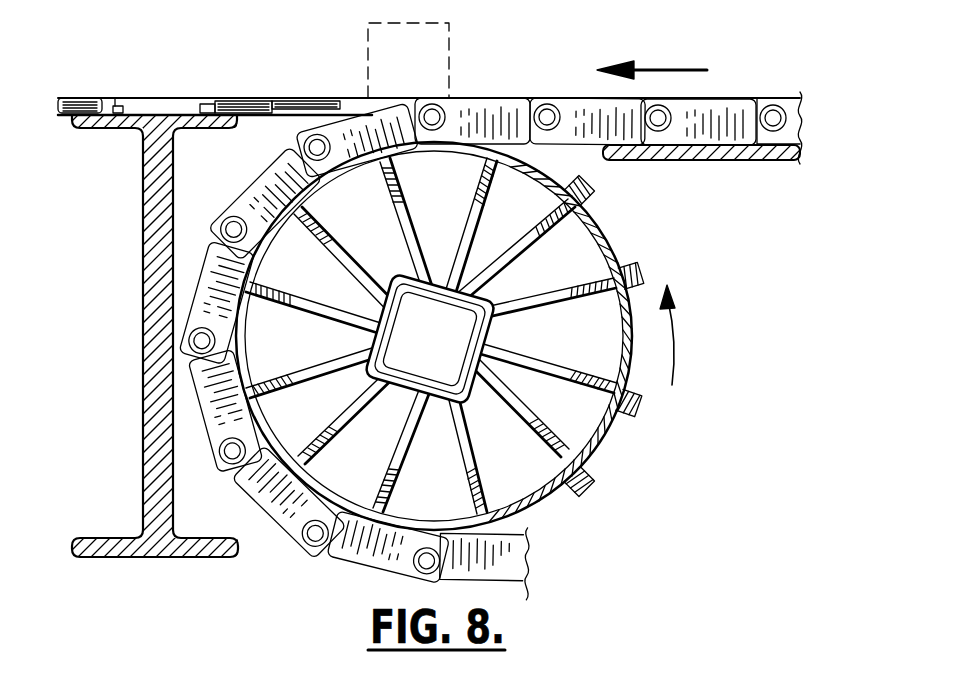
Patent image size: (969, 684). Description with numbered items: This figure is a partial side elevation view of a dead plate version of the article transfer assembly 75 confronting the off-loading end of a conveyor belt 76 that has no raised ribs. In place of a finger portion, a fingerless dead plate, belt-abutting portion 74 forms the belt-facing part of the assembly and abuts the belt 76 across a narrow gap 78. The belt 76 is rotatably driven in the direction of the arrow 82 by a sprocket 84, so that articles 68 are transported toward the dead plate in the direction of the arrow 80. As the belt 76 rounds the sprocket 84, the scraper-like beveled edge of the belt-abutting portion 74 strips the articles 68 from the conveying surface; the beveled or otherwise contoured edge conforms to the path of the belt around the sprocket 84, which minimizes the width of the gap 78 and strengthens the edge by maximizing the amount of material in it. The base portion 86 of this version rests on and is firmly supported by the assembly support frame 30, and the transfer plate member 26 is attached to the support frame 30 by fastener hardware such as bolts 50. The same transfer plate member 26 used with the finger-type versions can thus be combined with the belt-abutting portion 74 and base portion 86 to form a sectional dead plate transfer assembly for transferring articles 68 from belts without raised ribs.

The transfer plate member 26 is at (82, 105).
The assembly support frame 30 is at (142, 385).
The bolts 50 is at (118, 107).
The articles 68 is at (435, 48).
The belt-abutting portion 74 is at (322, 97).
The article transfer assembly 75 is at (200, 98).
The belt 76 is at (717, 160).
The gap 78 is at (335, 116).
The arrow 80 is at (677, 70).
The arrow 82 is at (677, 320).
The sprocket 84 is at (545, 512).
The base portion 86 is at (247, 112).